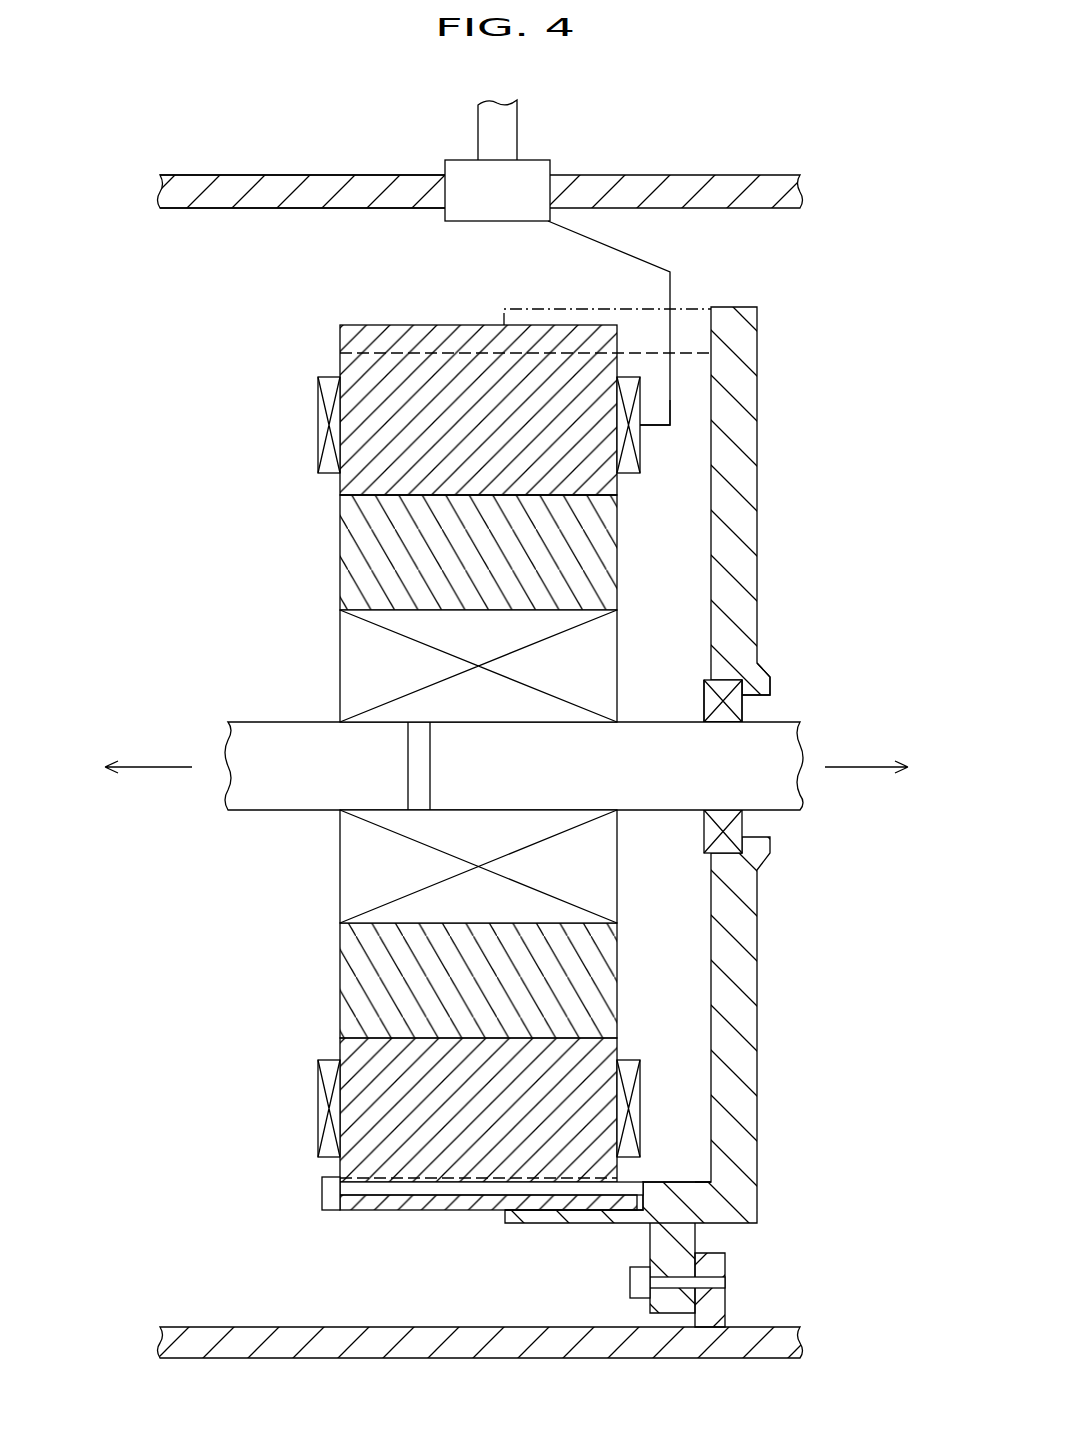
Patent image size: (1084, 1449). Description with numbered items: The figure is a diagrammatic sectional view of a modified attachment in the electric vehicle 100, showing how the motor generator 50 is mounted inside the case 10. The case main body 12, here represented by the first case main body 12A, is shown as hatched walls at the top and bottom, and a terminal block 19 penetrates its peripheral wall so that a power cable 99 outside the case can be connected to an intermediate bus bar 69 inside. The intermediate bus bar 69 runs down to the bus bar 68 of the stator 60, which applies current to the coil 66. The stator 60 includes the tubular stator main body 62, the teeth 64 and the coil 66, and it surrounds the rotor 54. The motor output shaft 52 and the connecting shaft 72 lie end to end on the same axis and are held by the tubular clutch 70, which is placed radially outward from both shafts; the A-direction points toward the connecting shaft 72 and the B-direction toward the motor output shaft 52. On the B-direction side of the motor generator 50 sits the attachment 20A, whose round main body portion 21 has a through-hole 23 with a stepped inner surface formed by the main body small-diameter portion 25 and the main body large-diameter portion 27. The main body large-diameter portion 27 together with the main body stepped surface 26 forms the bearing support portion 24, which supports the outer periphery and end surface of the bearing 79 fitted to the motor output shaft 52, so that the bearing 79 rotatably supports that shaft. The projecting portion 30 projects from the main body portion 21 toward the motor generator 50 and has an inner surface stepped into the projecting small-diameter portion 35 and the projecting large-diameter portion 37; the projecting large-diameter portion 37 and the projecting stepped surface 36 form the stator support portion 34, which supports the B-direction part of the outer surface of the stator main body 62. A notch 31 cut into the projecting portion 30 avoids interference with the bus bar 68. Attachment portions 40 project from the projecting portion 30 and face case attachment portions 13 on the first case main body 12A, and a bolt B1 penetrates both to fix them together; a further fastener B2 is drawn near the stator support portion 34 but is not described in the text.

The electric vehicle 100 is at (821, 100).
The case 10 is at (708, 158).
The case main body 12 is at (645, 175).
The first case main body 12A is at (370, 175).
The terminal block 19 is at (535, 160).
The power cable 99 is at (517, 115).
The intermediate bus bar 69 is at (588, 240).
The notch 31 is at (711, 307).
The attachment 20A is at (789, 434).
The main body portion 21 is at (757, 485).
The main body small-diameter portion 25 is at (770, 690).
The motor output shaft 52 is at (775, 720).
The main body large-diameter portion 27 is at (710, 700).
The main body stepped surface 26 is at (737, 716).
The bearing support portion 24 is at (745, 765).
The bearing 79 is at (704, 830).
The through-hole 23 is at (770, 840).
The connecting shaft 72 is at (258, 722).
The motor generator 50 is at (158, 367).
The stator 60 is at (252, 340).
The stator main body 62 is at (340, 340).
The coil 66 is at (318, 428).
The teeth 64 is at (340, 480).
The bus bar 68 is at (680, 405).
The rotor 54 is at (340, 548).
The clutch 70 is at (340, 667).
The projecting small-diameter portion 35 is at (703, 1182).
The projecting stepped surface 36 is at (600, 1186).
The projecting large-diameter portion 37 is at (600, 1202).
The stator support portion 34 is at (812, 1165).
The projecting portion 30 is at (505, 1215).
The attachment portion 40 is at (650, 1240).
The case attachment portion 13 is at (725, 1265).
The bolt B1 is at (630, 1285).
The bolt B2 is at (322, 1195).